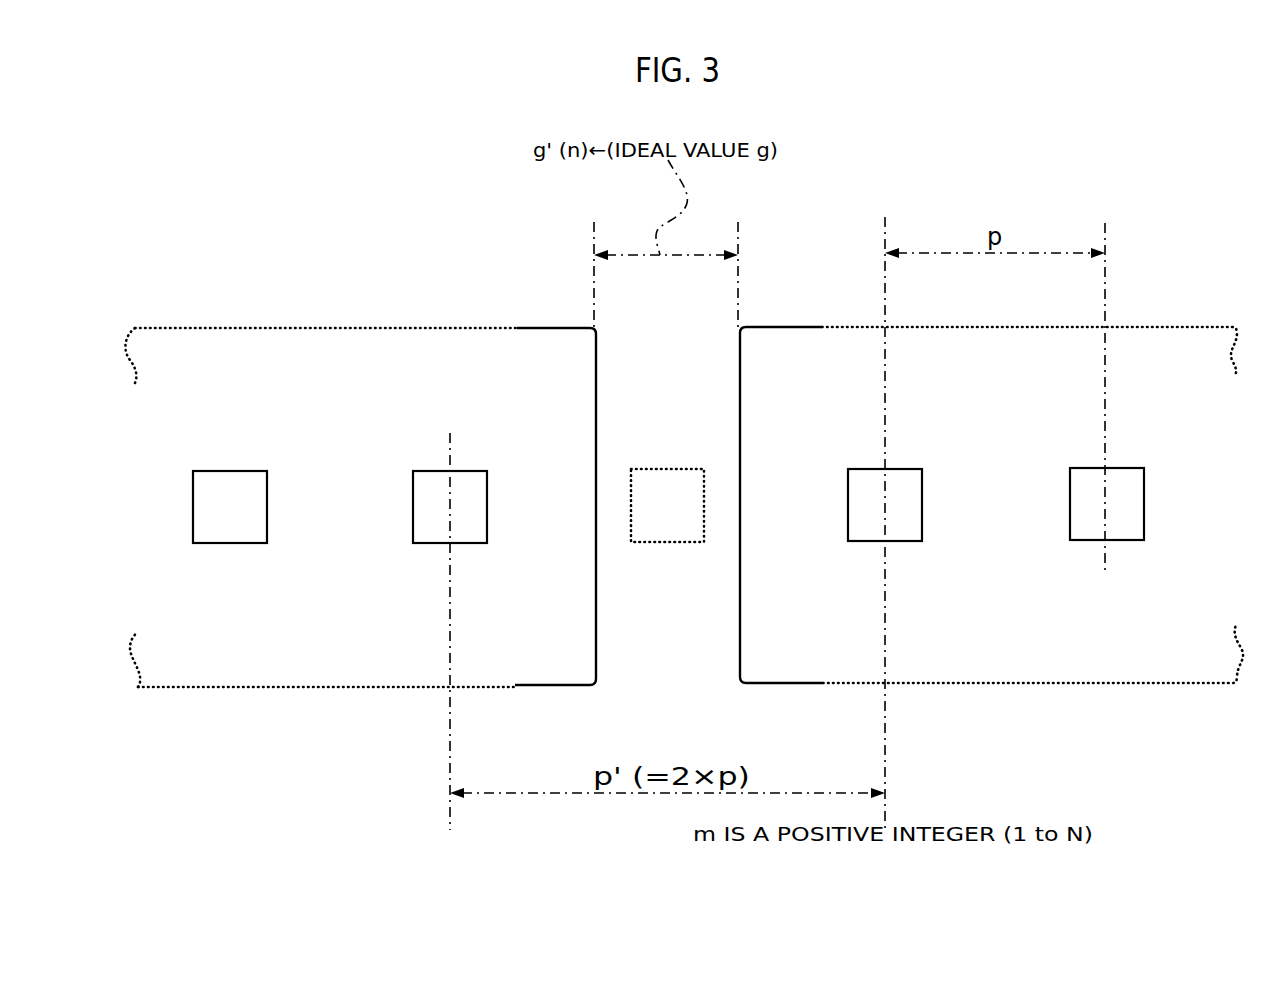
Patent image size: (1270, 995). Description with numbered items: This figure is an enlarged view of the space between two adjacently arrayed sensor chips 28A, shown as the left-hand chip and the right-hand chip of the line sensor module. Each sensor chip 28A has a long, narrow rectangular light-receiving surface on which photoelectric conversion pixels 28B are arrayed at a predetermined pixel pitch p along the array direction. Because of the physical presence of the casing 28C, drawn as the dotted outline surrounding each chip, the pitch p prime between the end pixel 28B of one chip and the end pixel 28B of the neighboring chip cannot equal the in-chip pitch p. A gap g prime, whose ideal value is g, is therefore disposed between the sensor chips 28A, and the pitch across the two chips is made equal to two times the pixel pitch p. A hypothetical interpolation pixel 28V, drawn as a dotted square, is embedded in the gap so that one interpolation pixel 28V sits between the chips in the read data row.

The sensor chip 28A is at (530, 318).
The pixel 28B is at (238, 497).
The casing 28C is at (280, 362).
The interpolation pixel 28V is at (660, 489).